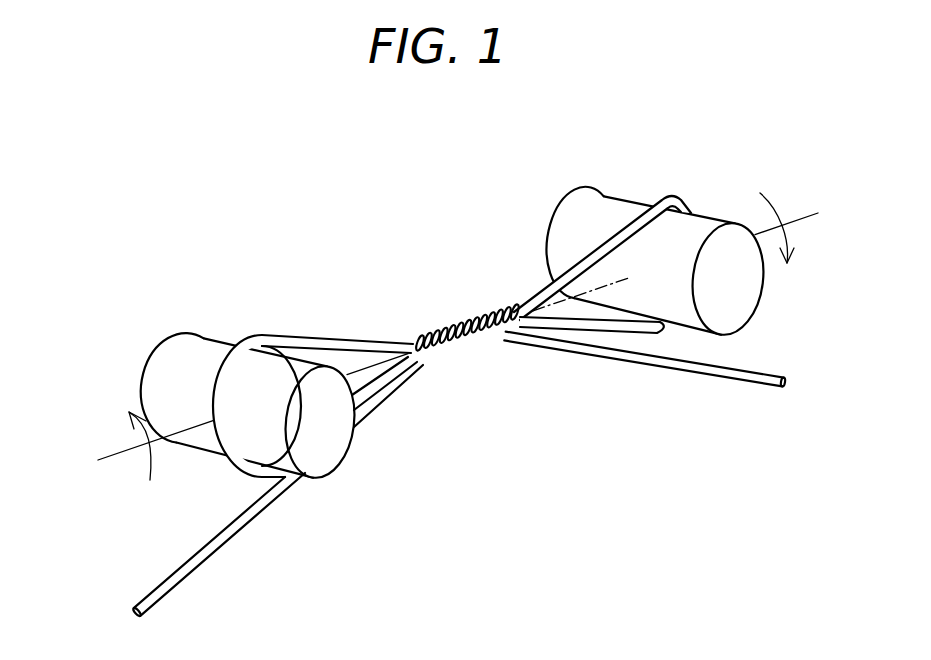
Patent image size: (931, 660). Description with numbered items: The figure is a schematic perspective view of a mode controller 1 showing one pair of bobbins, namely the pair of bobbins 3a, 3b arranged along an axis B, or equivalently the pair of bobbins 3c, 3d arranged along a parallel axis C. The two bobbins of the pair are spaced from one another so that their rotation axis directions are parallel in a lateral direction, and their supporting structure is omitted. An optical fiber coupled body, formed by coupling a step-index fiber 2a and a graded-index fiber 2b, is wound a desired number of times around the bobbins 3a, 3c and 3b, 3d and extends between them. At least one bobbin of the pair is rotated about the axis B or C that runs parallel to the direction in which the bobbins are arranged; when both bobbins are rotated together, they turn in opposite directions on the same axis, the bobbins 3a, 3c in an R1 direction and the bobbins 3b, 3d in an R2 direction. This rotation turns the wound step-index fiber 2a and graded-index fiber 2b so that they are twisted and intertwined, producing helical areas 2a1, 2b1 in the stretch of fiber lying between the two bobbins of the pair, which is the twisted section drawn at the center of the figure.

The mode controller 1 is at (430, 262).
The step-index fiber 2a is at (458, 409).
The graded-index fiber 2b is at (217, 550).
The helical area 2a1 is at (492, 363).
The helical area 2b1 is at (478, 361).
The bobbin 3a is at (251, 378).
The bobbin 3c is at (200, 353).
The bobbin 3b is at (658, 236).
The bobbin 3d is at (610, 215).
The rotation direction R1 is at (146, 460).
The rotation direction R2 is at (769, 215).
The axis B is at (434, 336).
The axis C is at (106, 437).